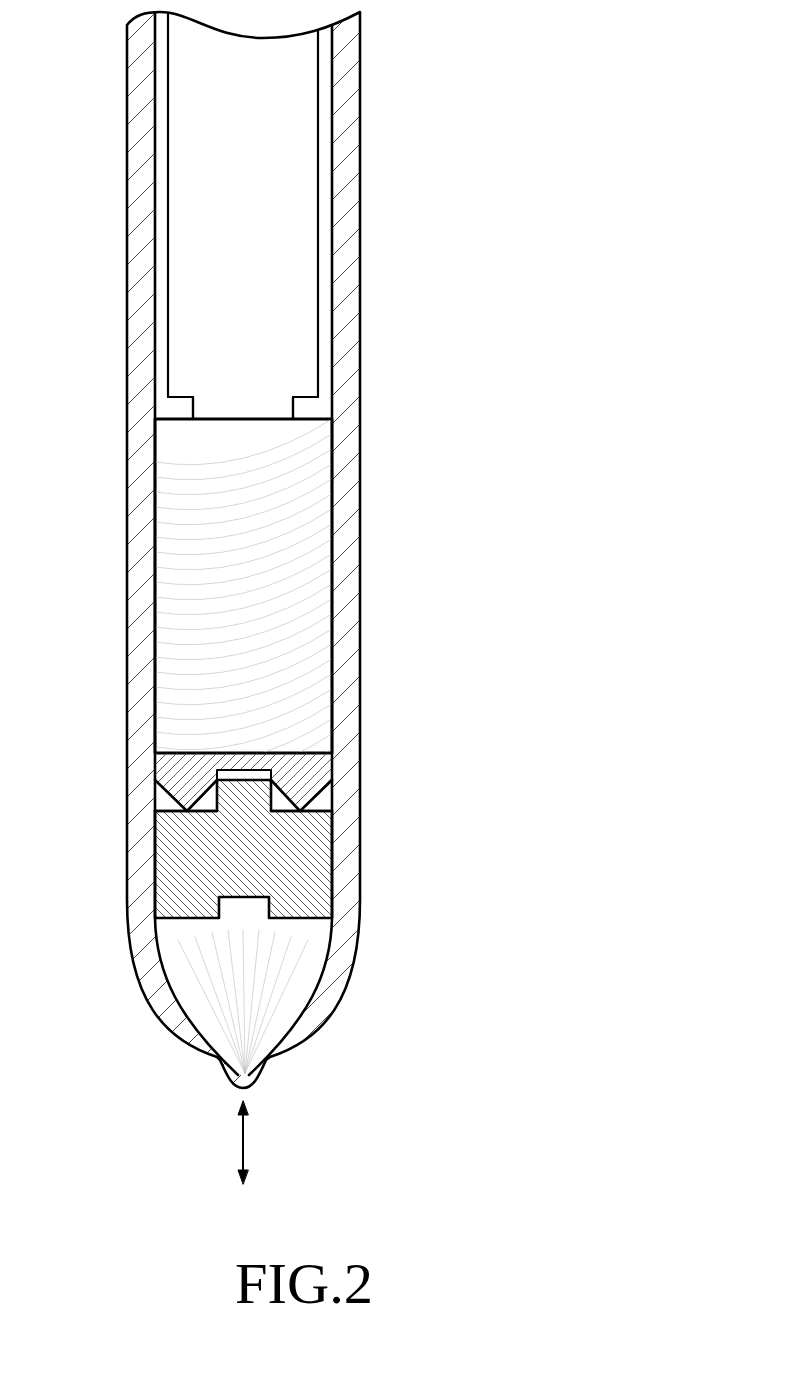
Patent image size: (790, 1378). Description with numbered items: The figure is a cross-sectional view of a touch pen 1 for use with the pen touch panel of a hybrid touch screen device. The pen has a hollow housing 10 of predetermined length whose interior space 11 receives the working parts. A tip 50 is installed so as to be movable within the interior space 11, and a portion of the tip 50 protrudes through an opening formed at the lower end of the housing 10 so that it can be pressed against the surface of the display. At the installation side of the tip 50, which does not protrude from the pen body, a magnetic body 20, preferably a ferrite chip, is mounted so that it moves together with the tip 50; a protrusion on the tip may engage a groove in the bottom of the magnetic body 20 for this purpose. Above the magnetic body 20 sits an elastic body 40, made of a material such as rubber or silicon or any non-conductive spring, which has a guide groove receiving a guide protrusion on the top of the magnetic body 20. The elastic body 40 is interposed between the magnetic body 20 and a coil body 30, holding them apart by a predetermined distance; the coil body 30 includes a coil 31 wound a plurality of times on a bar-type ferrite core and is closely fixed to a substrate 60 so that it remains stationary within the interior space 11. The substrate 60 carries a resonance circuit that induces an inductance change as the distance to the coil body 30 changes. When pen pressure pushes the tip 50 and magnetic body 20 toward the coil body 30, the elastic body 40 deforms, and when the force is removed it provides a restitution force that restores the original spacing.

The touch pen 1 is at (567, 193).
The housing 10 is at (352, 116).
The interior space 11 is at (172, 410).
The magnetic body 20 is at (155, 882).
The coil body 30 is at (185, 452).
The coil 31 is at (197, 576).
The elastic body 40 is at (182, 772).
The tip 50 is at (237, 1060).
The substrate 60 is at (165, 114).